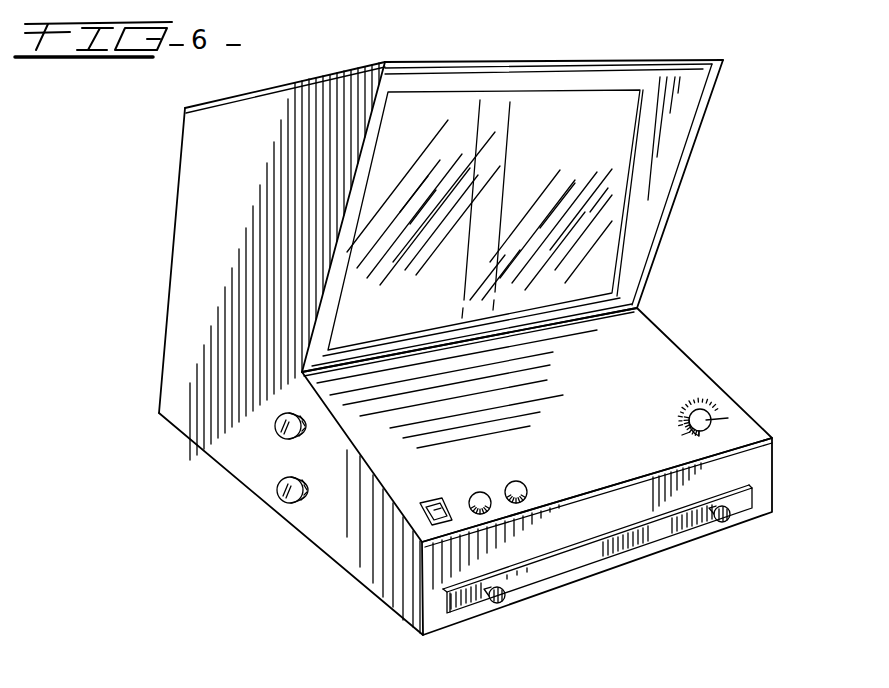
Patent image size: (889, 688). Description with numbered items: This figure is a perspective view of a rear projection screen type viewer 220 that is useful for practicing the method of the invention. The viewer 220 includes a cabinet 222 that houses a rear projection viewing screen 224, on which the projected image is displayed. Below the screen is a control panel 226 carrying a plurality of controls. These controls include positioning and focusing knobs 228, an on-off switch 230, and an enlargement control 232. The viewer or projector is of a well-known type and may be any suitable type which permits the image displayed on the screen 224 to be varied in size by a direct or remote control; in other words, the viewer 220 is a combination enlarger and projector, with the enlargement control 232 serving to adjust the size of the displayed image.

The rear projection screen type viewer 220 is at (156, 286).
The cabinet 222 is at (276, 103).
The rear projection viewing screen 224 is at (627, 128).
The control panel 226 is at (668, 340).
The positioning and focusing knobs 228 is at (278, 443).
The on-off switch 230 is at (443, 507).
The enlargement control 232 is at (718, 417).